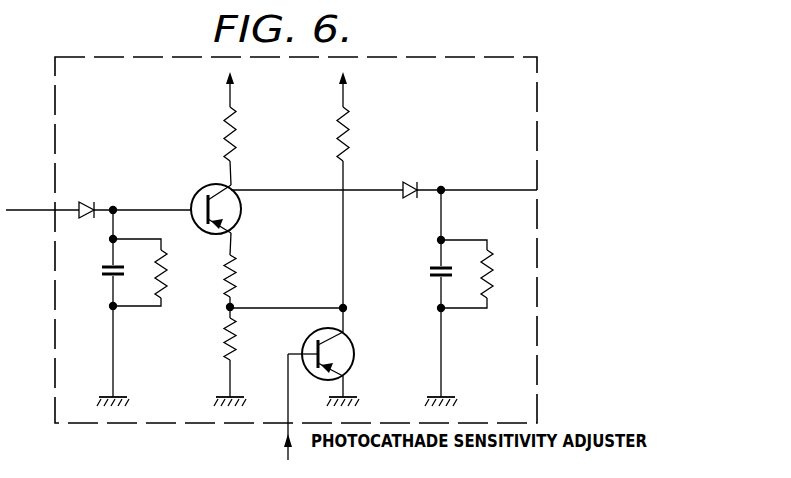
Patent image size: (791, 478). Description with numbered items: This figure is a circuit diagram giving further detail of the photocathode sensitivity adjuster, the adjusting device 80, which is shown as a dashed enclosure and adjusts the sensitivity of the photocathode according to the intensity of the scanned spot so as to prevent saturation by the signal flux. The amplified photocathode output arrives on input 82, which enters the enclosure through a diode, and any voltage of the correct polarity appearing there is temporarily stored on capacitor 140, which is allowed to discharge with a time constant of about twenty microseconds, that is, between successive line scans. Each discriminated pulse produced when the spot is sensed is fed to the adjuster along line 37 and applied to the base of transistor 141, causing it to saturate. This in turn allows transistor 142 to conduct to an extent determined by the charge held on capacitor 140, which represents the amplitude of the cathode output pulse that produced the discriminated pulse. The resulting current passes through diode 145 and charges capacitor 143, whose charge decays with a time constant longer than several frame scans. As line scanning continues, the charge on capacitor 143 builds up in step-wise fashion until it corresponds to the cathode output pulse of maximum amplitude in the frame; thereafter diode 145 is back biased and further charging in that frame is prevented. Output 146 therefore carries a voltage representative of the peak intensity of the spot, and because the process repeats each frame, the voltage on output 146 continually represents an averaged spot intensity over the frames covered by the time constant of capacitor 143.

The adjusting device 80 is at (88, 433).
The input 82 is at (39, 200).
The capacitor 140 is at (98, 286).
The transistor 142 is at (181, 196).
The transistor 141 is at (364, 357).
The line 37 is at (278, 436).
The diode 145 is at (411, 174).
The output 146 is at (505, 168).
The capacitor 143 is at (430, 287).